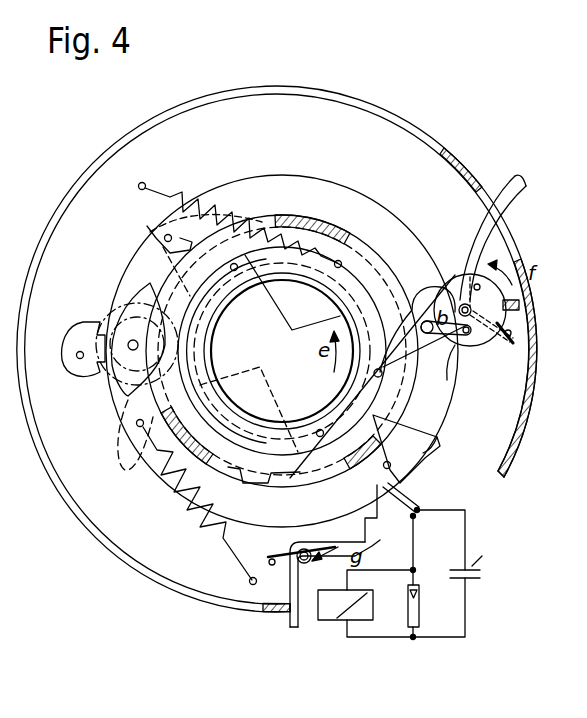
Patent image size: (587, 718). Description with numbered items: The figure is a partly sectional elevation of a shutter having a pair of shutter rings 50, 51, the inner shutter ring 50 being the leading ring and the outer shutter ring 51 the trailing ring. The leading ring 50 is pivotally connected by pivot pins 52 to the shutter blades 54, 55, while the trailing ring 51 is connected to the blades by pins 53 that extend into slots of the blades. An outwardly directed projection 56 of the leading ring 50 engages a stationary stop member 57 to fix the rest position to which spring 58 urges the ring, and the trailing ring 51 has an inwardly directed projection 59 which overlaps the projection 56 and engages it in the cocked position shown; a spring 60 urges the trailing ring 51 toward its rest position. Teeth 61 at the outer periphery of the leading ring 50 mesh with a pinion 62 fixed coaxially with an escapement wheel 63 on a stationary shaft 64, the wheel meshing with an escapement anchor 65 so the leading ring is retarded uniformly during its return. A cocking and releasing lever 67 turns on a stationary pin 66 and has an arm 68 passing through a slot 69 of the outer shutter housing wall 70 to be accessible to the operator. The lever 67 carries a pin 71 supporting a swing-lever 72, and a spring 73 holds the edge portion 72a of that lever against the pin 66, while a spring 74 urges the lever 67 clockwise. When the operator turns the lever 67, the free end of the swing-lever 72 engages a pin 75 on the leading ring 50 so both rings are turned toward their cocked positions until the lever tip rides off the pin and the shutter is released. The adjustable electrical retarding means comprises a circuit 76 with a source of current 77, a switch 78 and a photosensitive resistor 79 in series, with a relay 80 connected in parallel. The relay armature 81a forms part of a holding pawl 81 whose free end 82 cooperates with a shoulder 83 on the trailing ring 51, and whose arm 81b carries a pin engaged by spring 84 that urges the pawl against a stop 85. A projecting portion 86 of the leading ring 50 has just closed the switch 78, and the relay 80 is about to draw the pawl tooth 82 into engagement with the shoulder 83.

The inner shutter ring 50 is at (357, 267).
The outer shutter ring 51 is at (365, 207).
The pivot pins 52 is at (236, 271).
The pins 53 is at (150, 235).
The shutter blade 54 is at (300, 464).
The shutter blade 55 is at (258, 222).
The outwardly directed projection 56 is at (268, 485).
The stationary stop member 57 is at (348, 472).
The spring 58 is at (183, 192).
The inwardly directed projection 59 is at (248, 475).
The spring 60 is at (222, 542).
The teeth 61 is at (172, 304).
The pinion 62 is at (120, 296).
The escapement wheel 63 is at (103, 318).
The stationary shaft 64 is at (118, 389).
The escapement anchor 65 is at (68, 347).
The stationary pin 66 is at (463, 302).
The cocking and releasing lever 67 is at (448, 277).
The arm 68 is at (520, 180).
The slot 69 is at (512, 240).
The outer shutter housing wall 70 is at (458, 172).
The pin 71 is at (450, 370).
The swing-lever 72 is at (412, 366).
The edge portion 72a is at (437, 298).
The spring 73 is at (465, 345).
The spring 74 is at (533, 307).
The pin 75 is at (373, 430).
The circuit 76 is at (465, 550).
The source of current 77 is at (476, 559).
The switch 78 is at (416, 497).
The photosensitive resistor 79 is at (419, 606).
The relay 80 is at (331, 620).
The holding pawl 81 is at (305, 575).
The armature 81a is at (292, 628).
The arm 81b is at (372, 550).
The free end 82 is at (372, 526).
The shoulder 83 is at (340, 510).
The spring 84 is at (271, 565).
The stop 85 is at (272, 612).
The projecting portion 86 is at (420, 460).